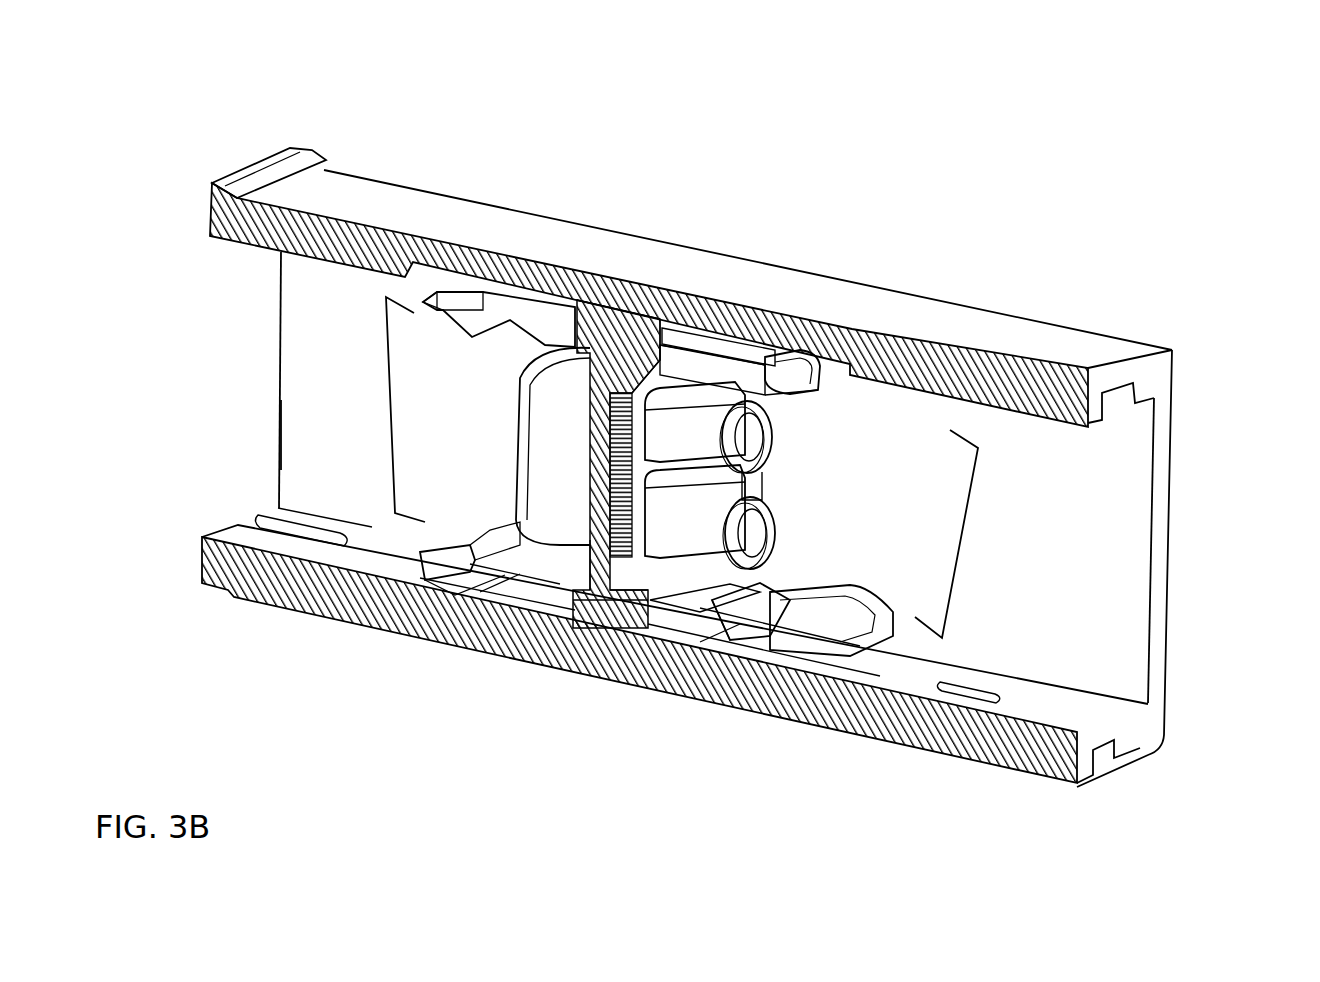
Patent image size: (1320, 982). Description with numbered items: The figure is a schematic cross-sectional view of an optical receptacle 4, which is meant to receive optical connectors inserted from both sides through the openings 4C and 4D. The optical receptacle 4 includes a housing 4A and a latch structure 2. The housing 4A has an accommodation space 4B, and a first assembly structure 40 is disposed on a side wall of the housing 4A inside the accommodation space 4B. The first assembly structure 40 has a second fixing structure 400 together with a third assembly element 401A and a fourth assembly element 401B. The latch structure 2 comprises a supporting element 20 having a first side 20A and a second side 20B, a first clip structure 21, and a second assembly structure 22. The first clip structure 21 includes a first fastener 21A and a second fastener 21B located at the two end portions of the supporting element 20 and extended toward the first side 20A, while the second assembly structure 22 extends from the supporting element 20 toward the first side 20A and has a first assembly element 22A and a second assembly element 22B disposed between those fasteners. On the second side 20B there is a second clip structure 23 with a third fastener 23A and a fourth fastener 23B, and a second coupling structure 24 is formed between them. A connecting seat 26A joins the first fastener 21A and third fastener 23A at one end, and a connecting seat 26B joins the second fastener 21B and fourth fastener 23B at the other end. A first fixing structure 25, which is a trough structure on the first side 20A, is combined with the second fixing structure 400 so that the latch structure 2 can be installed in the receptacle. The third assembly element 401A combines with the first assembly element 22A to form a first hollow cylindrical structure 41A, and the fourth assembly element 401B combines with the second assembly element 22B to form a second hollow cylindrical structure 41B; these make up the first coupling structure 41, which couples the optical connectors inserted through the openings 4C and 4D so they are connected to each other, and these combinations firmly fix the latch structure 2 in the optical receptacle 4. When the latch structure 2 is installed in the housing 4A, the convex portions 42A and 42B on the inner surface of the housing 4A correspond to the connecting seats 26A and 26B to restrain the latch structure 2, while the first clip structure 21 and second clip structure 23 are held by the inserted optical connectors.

The latch structure 2 is at (403, 580).
The optical receptacle 4 is at (222, 165).
The housing 4A is at (349, 186).
The accommodation space 4B is at (346, 330).
The opening 4C is at (300, 452).
The opening 4D is at (1122, 555).
The supporting element 20 is at (522, 606).
The first side 20A is at (963, 547).
The second side 20B is at (386, 413).
The first clip structure 21 is at (824, 365).
The first fastener 21A is at (745, 332).
The second fastener 21B is at (800, 645).
The second assembly structure 22 is at (718, 383).
The first assembly element 22A is at (785, 300).
The second assembly element 22B is at (742, 606).
The second clip structure 23 is at (465, 280).
The third fastener 23A is at (507, 300).
The fourth fastener 23B is at (445, 572).
The second coupling structure 24 is at (535, 436).
The first fixing structure 25 is at (590, 566).
The connecting seat 26A is at (640, 272).
The connecting seat 26B is at (614, 640).
The first assembly structure 40 is at (766, 495).
The first coupling structure 41 is at (790, 430).
The first hollow cylindrical structure 41A is at (712, 449).
The second hollow cylindrical structure 41B is at (712, 539).
The second fixing structure 400 is at (590, 452).
The third assembly element 401A is at (697, 312).
The fourth assembly element 401B is at (712, 582).
The convex portion 42A is at (590, 318).
The convex portion 42B is at (600, 622).